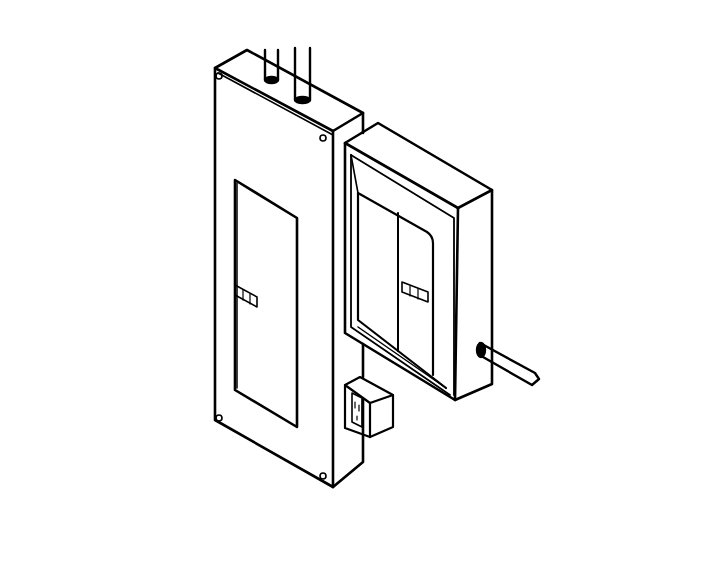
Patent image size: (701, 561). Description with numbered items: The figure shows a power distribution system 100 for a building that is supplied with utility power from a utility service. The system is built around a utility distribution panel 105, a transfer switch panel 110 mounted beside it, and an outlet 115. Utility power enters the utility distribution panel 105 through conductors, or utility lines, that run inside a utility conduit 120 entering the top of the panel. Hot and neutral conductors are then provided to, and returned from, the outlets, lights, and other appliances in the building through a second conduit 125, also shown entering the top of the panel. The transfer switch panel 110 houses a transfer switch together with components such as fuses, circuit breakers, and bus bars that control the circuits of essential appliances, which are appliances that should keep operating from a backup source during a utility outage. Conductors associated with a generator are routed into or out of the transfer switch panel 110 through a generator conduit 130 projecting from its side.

The power distribution system 100 is at (143, 174).
The utility distribution panel 105 is at (176, 363).
The transfer switch panel 110 is at (485, 164).
The outlet 115 is at (392, 438).
The utility conduit 120 is at (307, 72).
The conduit 125 is at (272, 52).
The generator conduit 130 is at (517, 368).